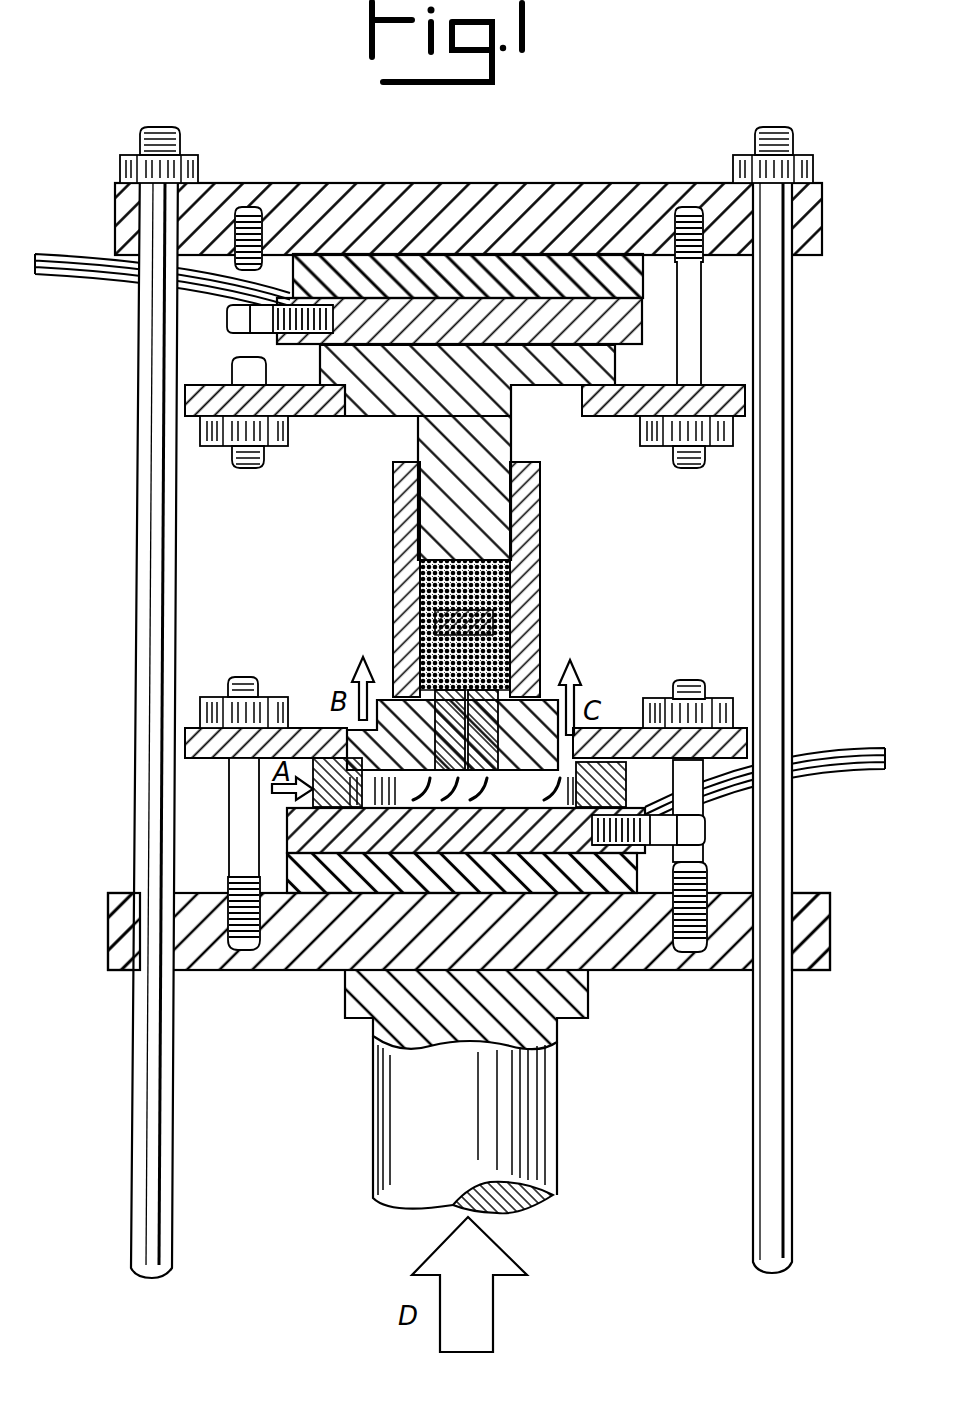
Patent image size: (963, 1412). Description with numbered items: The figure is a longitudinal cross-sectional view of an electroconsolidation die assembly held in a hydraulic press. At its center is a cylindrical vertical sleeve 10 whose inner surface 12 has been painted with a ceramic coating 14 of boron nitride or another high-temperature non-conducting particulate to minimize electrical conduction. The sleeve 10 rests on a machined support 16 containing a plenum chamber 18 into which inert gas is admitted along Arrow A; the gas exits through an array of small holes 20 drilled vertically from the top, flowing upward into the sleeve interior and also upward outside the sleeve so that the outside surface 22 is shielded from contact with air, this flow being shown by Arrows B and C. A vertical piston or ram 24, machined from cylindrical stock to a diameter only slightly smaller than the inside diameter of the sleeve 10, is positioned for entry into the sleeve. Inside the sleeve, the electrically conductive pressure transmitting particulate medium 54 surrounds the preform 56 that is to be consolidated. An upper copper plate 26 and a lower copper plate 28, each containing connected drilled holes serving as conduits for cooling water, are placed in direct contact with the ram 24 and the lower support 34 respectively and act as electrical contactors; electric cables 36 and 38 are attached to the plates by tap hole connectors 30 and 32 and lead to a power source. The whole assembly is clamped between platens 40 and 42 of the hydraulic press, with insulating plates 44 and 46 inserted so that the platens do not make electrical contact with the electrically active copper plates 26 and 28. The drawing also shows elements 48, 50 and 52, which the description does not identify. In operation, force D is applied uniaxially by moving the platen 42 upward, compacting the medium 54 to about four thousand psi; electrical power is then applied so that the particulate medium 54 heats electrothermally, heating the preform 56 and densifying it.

The cylindrical vertical sleeve 10 is at (533, 595).
The inner surface 12 is at (498, 527).
The ceramic coating 14 is at (432, 548).
The machined support 16 is at (548, 724).
The plenum chamber 18 is at (600, 770).
The array of small holes 20 is at (523, 700).
The outside surface 22 is at (393, 477).
The vertical piston or ram 24 is at (503, 490).
The upper copper plate 26 is at (478, 318).
The lower copper plate 28 is at (557, 843).
The tap hole connector 30 is at (335, 305).
The tap hole connector 32 is at (640, 862).
The lower support 34 is at (617, 781).
The electric cable 36 is at (63, 254).
The electric cable 38 is at (841, 773).
The platen 40 is at (560, 196).
The platen 42 is at (725, 960).
The insulating plate 44 is at (600, 268).
The insulating plate 46 is at (330, 883).
The tie rod 48 is at (148, 640).
The nut 50 is at (183, 206).
The upper ram 52 is at (437, 442).
The electrically conductive pressure transmitting particulate medium 54 is at (512, 573).
The preform 56 is at (447, 620).